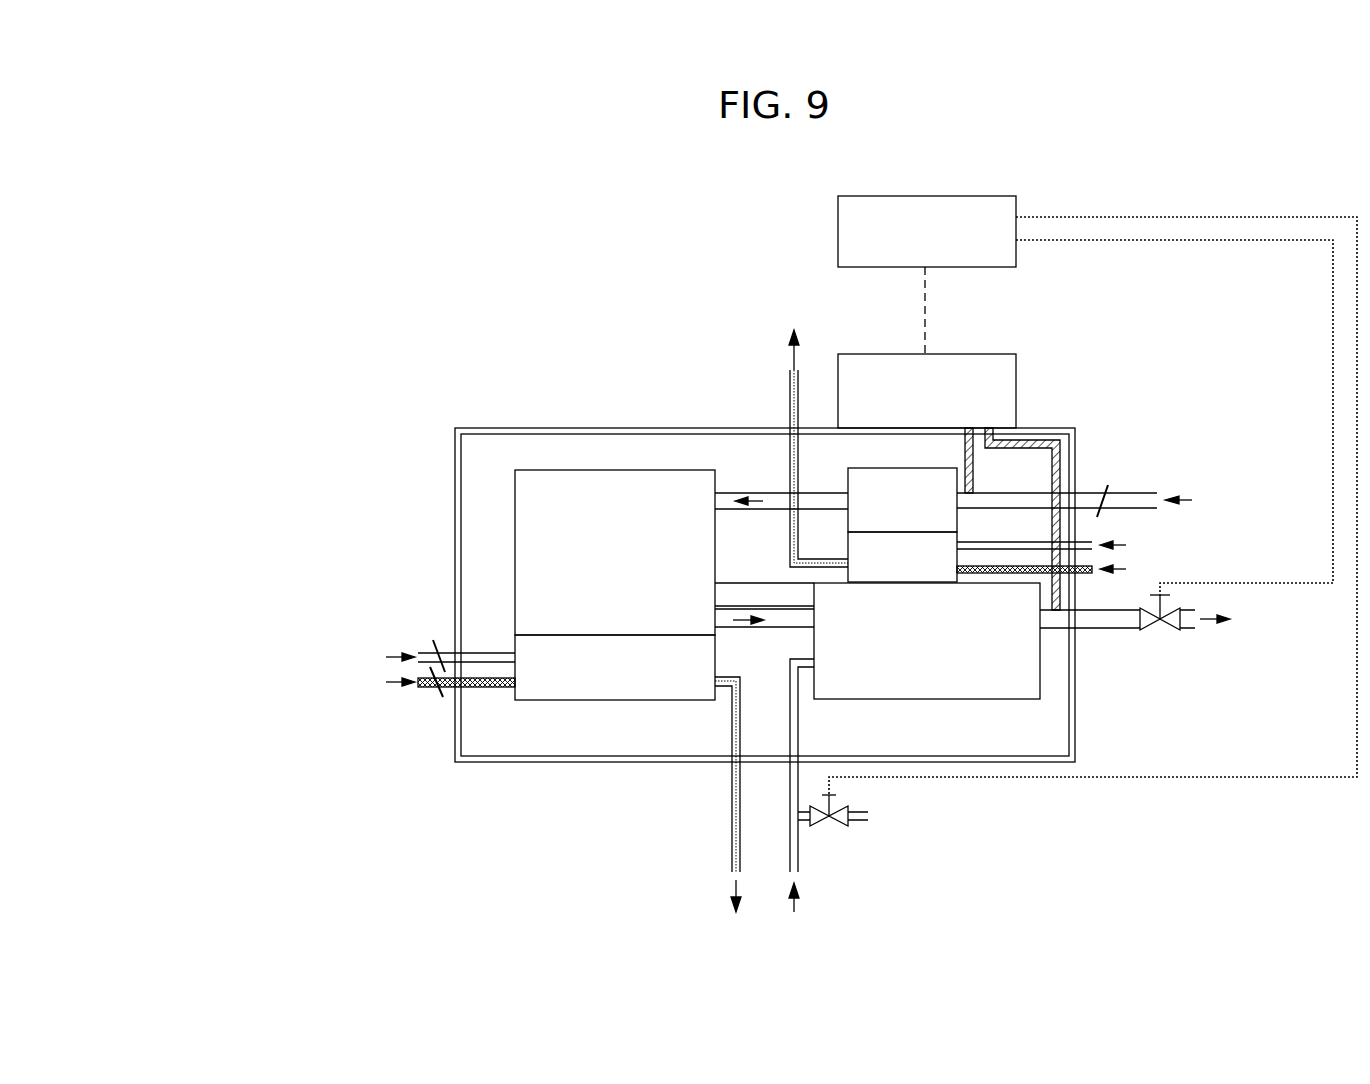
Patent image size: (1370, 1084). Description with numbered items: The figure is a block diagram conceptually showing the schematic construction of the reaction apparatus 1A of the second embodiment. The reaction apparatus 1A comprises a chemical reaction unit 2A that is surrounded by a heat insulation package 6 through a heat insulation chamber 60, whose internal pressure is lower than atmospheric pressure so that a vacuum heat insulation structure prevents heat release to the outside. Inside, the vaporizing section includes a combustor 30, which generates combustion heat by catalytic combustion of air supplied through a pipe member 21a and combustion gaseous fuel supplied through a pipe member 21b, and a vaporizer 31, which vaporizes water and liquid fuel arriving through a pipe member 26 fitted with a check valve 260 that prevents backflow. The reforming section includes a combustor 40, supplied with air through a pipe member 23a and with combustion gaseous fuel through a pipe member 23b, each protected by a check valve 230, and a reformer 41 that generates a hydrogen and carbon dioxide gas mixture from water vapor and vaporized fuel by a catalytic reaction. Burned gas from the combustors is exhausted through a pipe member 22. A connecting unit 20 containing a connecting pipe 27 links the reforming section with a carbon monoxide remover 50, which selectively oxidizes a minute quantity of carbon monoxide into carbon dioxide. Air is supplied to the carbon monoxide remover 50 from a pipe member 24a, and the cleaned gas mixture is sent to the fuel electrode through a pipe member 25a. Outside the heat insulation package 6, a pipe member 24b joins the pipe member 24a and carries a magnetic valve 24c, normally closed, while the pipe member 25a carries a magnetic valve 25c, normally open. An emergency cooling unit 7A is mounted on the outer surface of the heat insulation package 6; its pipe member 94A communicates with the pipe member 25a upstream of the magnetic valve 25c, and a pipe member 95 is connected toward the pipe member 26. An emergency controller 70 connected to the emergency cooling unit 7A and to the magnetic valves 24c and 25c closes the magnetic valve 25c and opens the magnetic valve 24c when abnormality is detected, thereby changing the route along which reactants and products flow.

The reaction apparatus 1A is at (540, 294).
The heat insulation package 6 is at (483, 428).
The chemical reaction unit 2A is at (530, 448).
The reformer 41 is at (599, 470).
The combustor 40 is at (630, 700).
The pipe member 22 is at (790, 390).
The emergency controller 70 is at (968, 196).
The emergency cooling unit 7A is at (980, 354).
The pipe member 94A is at (1031, 440).
The pipe member 95 is at (973, 480).
The check valve 260 is at (1106, 488).
The pipe member 26 is at (1136, 493).
The pipe member 21a is at (1092, 543).
The pipe member 21b is at (1085, 575).
The vaporizer 31 is at (848, 480).
The combustor 30 is at (848, 548).
The connecting unit 20 is at (745, 583).
The connecting pipe 27 is at (755, 627).
The carbon monoxide remover 50 is at (951, 699).
The heat insulation chamber 60 is at (477, 495).
The check valve 230 is at (432, 648).
The pipe member 23a is at (470, 653).
The pipe member 23b is at (483, 687).
The pipe member 25a is at (1100, 628).
The magnetic valve 25c is at (1173, 630).
The pipe member 24a is at (798, 865).
The pipe member 24b is at (860, 820).
The magnetic valve 24c is at (848, 810).